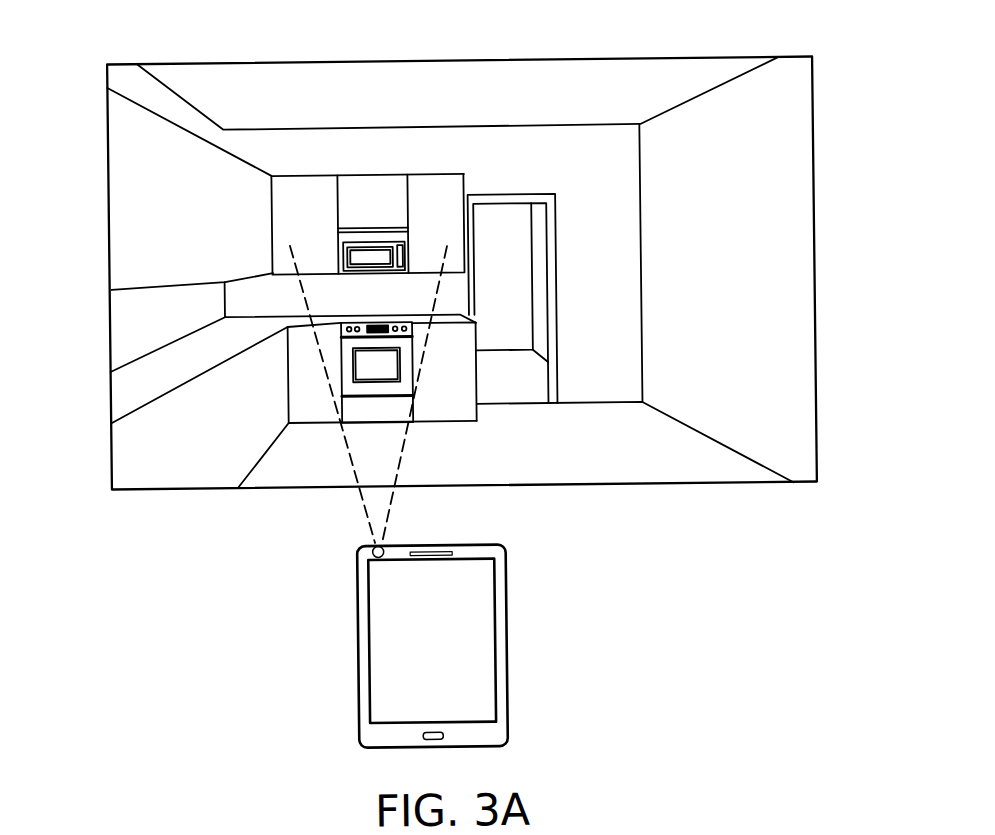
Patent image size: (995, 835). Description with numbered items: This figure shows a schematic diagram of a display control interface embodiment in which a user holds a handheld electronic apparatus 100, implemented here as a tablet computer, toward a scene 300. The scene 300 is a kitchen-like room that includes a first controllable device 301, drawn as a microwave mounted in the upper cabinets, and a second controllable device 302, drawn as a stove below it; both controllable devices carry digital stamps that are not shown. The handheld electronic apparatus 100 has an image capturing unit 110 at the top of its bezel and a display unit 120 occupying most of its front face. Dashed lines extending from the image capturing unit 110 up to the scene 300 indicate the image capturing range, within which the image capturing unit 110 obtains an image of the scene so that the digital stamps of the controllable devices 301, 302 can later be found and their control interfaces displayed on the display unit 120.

The scene 300 is at (595, 60).
The controllable device 301 is at (365, 252).
The controllable device 302 is at (347, 371).
The handheld electronic apparatus 100 is at (441, 647).
The image capturing unit 110 is at (369, 550).
The display unit 120 is at (491, 640).